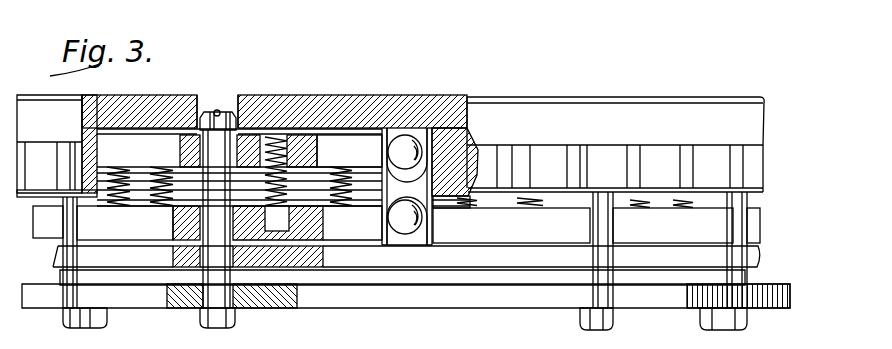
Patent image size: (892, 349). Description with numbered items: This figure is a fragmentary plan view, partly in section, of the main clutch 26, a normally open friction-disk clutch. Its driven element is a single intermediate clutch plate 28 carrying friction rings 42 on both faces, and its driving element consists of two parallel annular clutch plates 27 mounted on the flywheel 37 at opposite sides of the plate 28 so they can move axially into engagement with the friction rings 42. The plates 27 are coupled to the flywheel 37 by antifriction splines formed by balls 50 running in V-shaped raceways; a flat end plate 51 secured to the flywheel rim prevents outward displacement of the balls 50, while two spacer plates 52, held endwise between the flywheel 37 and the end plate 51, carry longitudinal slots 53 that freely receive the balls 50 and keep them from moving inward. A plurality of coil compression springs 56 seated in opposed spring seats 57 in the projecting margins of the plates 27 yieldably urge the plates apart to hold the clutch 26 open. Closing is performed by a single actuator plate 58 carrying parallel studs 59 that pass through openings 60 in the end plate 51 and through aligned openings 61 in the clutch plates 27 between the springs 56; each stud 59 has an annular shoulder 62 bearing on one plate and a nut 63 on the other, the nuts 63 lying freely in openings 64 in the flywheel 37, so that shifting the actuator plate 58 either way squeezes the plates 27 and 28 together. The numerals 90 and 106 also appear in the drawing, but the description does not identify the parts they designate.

The main clutch 26 is at (362, 85).
The driving clutch plates 27 is at (127, 230).
The driven clutch plate 28 is at (447, 188).
The flywheel 37 is at (642, 112).
The friction rings 42 is at (363, 173).
The balls 50 is at (418, 147).
The end plate 51 is at (494, 262).
The spacer plates 52 is at (430, 146).
The longitudinal slots 53 is at (408, 140).
The coil compression springs 56 is at (162, 168).
The spring seats 57 is at (292, 128).
The actuator plate 58 is at (537, 300).
The studs 59 is at (278, 137).
The openings in end plate 60 is at (247, 270).
The openings in clutch plates 61 is at (197, 168).
The annular shoulder 62 is at (197, 270).
The nut 63 is at (212, 112).
The openings in flywheel 64 is at (233, 132).
The member 90 is at (402, 337).
The member 106 is at (366, 348).